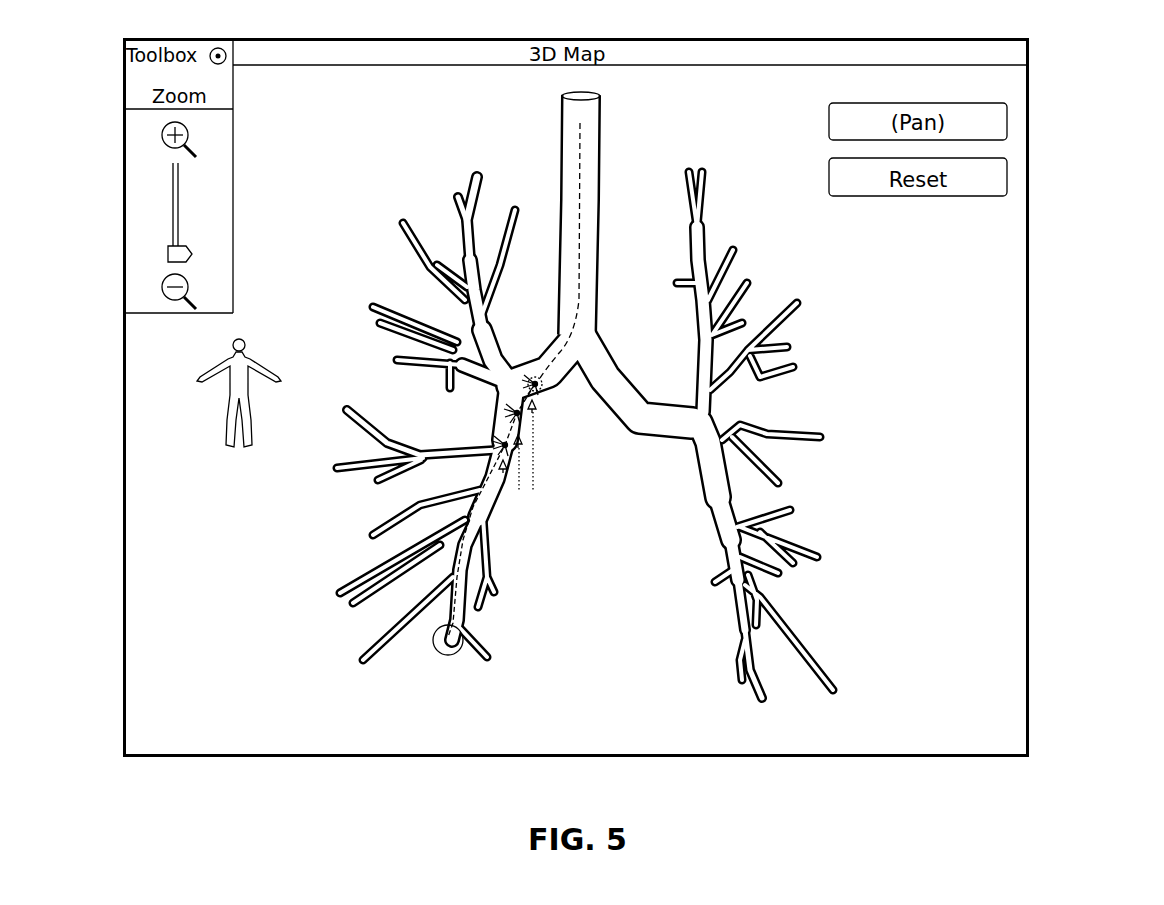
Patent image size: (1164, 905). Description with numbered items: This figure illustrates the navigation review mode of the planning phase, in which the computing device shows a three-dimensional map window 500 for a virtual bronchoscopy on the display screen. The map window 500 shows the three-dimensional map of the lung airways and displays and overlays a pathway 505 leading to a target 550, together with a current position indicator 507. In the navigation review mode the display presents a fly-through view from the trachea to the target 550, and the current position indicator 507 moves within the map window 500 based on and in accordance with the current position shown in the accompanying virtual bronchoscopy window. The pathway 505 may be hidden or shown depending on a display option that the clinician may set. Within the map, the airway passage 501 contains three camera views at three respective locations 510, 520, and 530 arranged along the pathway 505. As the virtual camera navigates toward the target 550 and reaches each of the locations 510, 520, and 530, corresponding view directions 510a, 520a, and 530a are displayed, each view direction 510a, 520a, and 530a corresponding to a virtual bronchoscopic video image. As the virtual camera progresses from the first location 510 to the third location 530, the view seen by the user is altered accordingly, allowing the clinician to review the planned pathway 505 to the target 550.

The 3D map window 500 is at (1050, 62).
The airway passage 501 is at (560, 133).
The pathway 505 is at (583, 163).
The current position indicator 507 is at (534, 377).
The first location 510 is at (541, 395).
The first view direction 510a is at (536, 425).
The second location 520 is at (520, 425).
The second view direction 520a is at (519, 452).
The third location 530 is at (502, 437).
The third view direction 530a is at (504, 478).
The target 550 is at (447, 656).